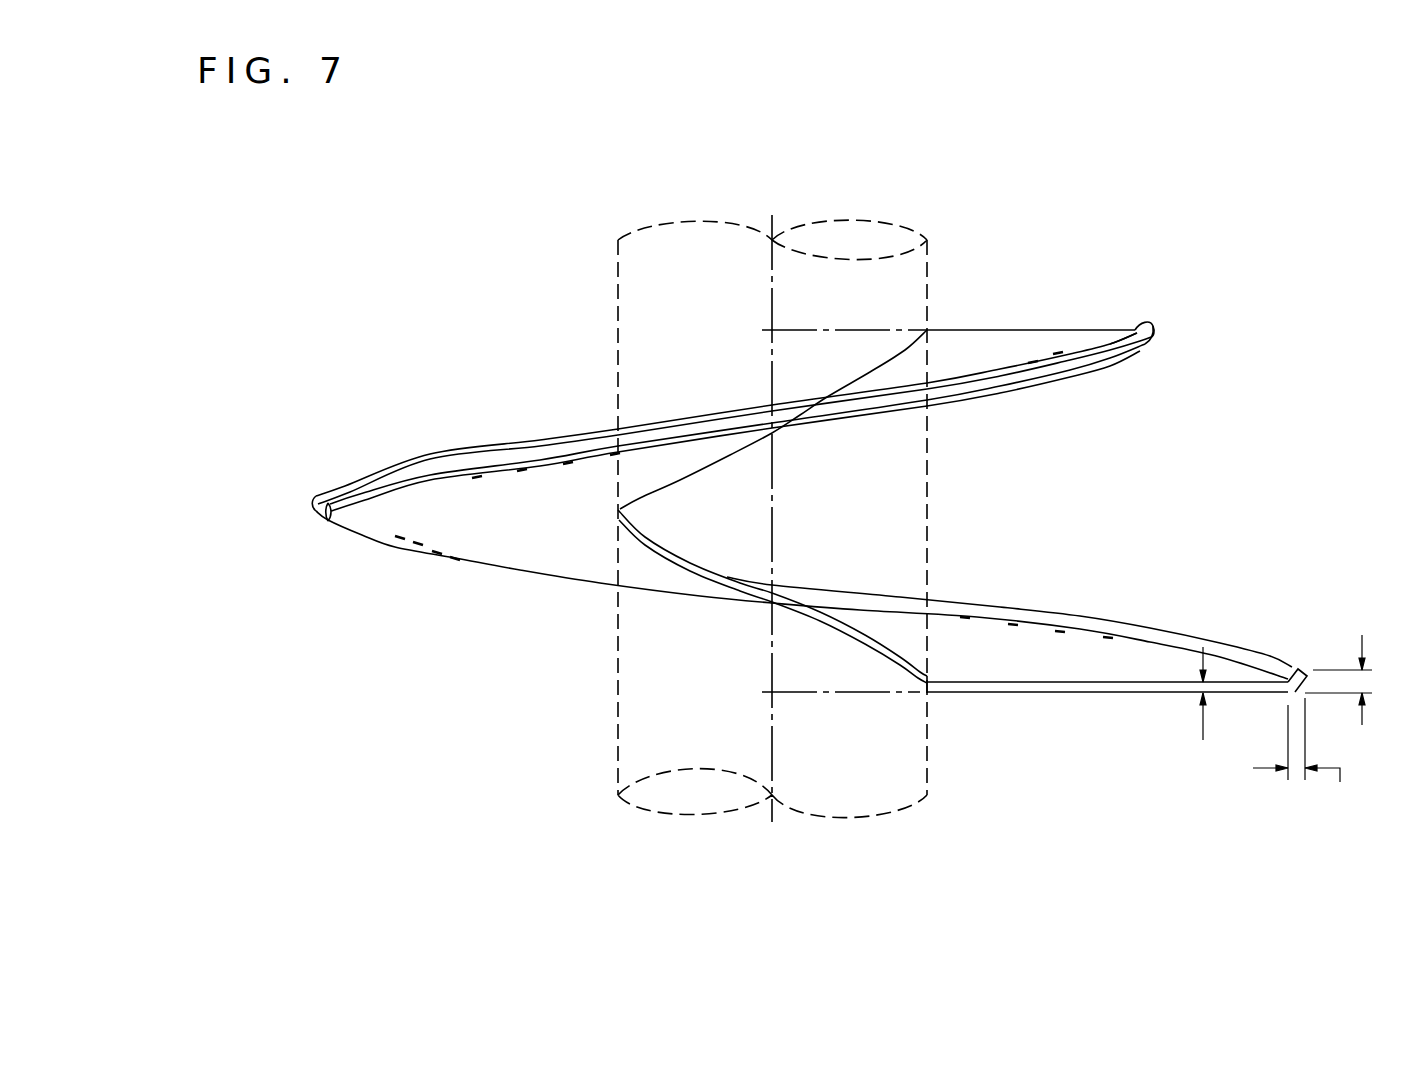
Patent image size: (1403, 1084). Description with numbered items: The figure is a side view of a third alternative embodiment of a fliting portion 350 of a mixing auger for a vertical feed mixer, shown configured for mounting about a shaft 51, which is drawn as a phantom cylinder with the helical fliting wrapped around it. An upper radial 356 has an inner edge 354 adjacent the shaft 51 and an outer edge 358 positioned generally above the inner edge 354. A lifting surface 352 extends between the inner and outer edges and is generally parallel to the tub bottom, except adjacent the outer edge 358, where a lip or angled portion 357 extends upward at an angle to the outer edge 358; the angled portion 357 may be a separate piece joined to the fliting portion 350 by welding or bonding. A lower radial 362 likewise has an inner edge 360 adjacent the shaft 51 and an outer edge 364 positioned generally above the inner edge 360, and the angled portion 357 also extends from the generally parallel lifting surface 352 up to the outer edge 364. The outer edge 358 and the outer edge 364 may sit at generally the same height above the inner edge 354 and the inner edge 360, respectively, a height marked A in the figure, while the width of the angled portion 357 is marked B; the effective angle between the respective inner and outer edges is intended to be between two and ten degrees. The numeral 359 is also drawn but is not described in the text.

The shaft 51 is at (683, 352).
The fliting portion 350 is at (547, 412).
The lifting surface 352 is at (968, 648).
The inner edge 354 is at (928, 332).
The upper radial 356 is at (1018, 328).
The angled portion 357 is at (1140, 323).
The outer edge 358 is at (1151, 316).
The blade end 359 is at (1202, 330).
The inner edge 360 is at (928, 692).
The lower radial 362 is at (1078, 692).
The outer edge 364 is at (1292, 658).